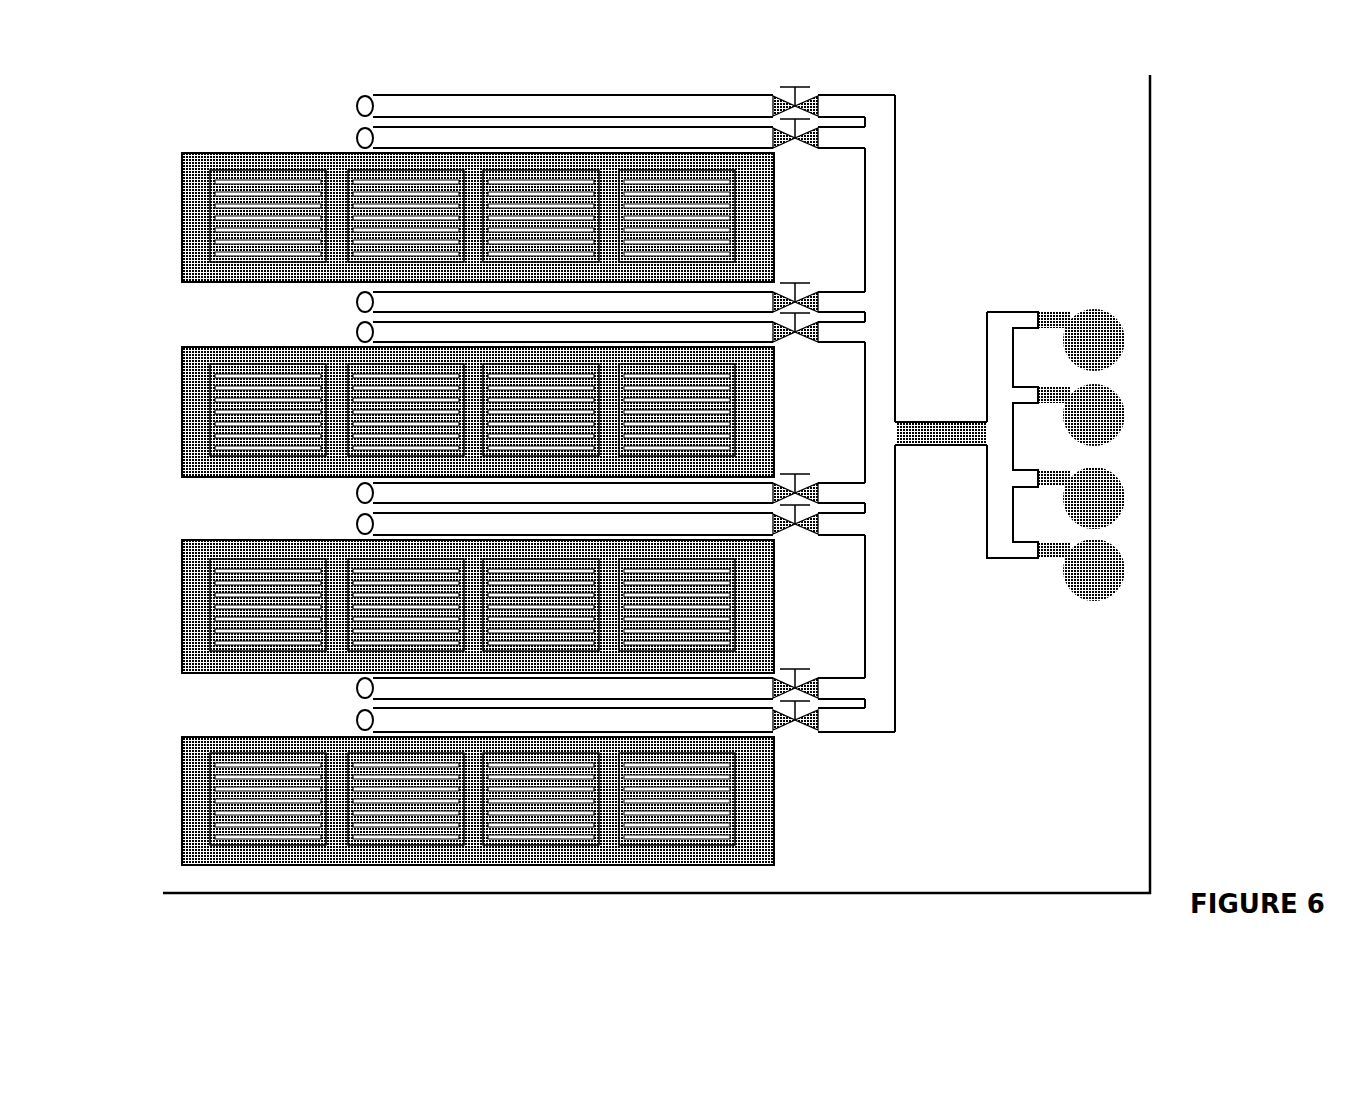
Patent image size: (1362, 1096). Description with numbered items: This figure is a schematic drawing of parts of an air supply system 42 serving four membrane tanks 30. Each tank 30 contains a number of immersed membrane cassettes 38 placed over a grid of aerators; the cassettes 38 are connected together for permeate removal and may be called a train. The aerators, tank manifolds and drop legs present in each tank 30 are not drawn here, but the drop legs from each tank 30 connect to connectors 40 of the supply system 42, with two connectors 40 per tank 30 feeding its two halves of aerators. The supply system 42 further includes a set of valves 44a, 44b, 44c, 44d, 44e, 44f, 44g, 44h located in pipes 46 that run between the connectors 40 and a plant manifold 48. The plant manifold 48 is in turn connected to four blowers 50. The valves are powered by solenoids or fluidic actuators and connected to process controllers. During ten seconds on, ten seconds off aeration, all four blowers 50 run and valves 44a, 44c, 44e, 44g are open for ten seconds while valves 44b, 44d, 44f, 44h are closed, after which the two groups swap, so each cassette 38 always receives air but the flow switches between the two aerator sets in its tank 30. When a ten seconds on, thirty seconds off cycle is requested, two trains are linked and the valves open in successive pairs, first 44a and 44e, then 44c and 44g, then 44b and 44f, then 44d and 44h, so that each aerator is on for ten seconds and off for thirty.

The tank 30 is at (183, 214).
The immersed membrane cassette 38 is at (630, 170).
The connector 40 is at (360, 99).
The supply system 42 is at (990, 740).
The valve 44a is at (801, 82).
The valve 44b is at (801, 151).
The valve 44c is at (800, 281).
The valve 44d is at (801, 348).
The valve 44e is at (801, 474).
The valve 44f is at (798, 540).
The valve 44g is at (801, 668).
The valve 44h is at (801, 735).
The pipe 46 is at (448, 127).
The plant manifold 48 is at (895, 627).
The blower 50 is at (1123, 322).